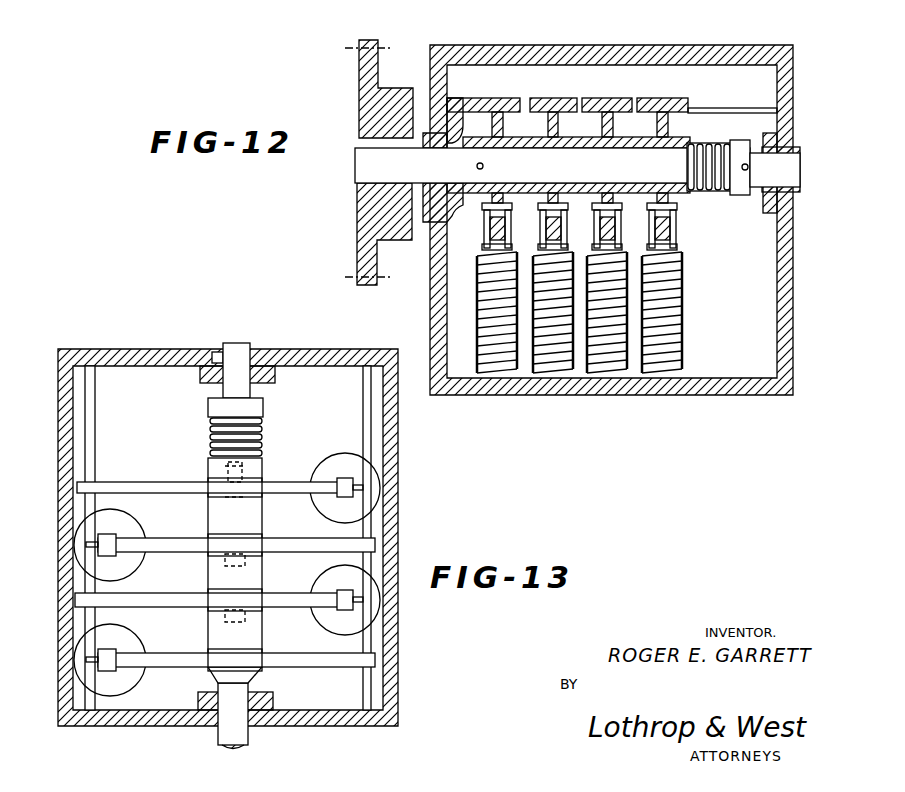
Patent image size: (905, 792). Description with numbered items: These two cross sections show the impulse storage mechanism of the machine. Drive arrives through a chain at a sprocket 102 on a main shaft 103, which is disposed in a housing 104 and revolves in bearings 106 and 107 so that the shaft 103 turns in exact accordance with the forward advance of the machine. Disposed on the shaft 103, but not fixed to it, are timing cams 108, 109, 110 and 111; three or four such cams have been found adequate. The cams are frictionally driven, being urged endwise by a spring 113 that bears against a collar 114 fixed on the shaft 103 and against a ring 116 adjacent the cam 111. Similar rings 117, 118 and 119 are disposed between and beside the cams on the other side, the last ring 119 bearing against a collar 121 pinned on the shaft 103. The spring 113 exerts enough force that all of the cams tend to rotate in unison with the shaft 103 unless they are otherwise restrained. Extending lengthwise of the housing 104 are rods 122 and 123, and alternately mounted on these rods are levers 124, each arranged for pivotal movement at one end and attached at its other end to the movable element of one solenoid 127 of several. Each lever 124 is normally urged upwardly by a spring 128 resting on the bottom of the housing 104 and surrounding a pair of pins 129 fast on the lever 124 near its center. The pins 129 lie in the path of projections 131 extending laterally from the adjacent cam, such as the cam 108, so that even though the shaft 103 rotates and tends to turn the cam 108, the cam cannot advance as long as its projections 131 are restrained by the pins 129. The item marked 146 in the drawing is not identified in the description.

In FIG. 12, the sprocket 102 is at (359, 82).
In FIG. 12, the main shaft 103 is at (357, 168).
In FIG. 13, the main shaft 103 is at (252, 345).
In FIG. 12, the housing 104 is at (745, 395).
In FIG. 13, the housing 104 is at (105, 358).
In FIG. 12, the bearing 106 is at (441, 216).
In FIG. 13, the bearing 106 is at (205, 726).
In FIG. 12, the bearing 107 is at (790, 157).
In FIG. 13, the bearing 107 is at (235, 328).
In FIG. 12, the timing cam 108 is at (498, 118).
In FIG. 13, the timing cam 108 is at (210, 652).
In FIG. 12, the timing cam 109 is at (570, 97).
In FIG. 13, the timing cam 109 is at (206, 592).
In FIG. 12, the timing cam 110 is at (620, 97).
In FIG. 13, the timing cam 110 is at (216, 538).
In FIG. 12, the timing cam 111 is at (650, 113).
In FIG. 13, the timing cam 111 is at (265, 482).
In FIG. 12, the spring 113 is at (702, 196).
In FIG. 13, the spring 113 is at (210, 425).
In FIG. 12, the collar 114 is at (736, 143).
In FIG. 13, the collar 114 is at (263, 406).
In FIG. 12, the ring 116 is at (690, 143).
In FIG. 13, the ring 116 is at (262, 452).
In FIG. 12, the ring 117 is at (660, 137).
In FIG. 12, the ring 118 is at (605, 137).
In FIG. 13, the ring 118 is at (242, 565).
In FIG. 12, the ring 119 is at (553, 115).
In FIG. 13, the ring 119 is at (241, 622).
In FIG. 12, the collar 121 is at (476, 122).
In FIG. 13, the rod 122 is at (96, 433).
In FIG. 13, the rod 123 is at (364, 392).
In FIG. 12, the lever 124 is at (485, 227).
In FIG. 13, the lever 124 is at (147, 481).
In FIG. 13, the solenoid 127 is at (342, 455).
In FIG. 12, the spring 128 is at (500, 380).
In FIG. 12, the pin 129 is at (738, 266).
In FIG. 13, the pin 129 is at (262, 532).
In FIG. 12, the projection 131 is at (561, 226).
In FIG. 13, the projection 131 is at (212, 463).
In FIG. 12, the wall boss 146 is at (433, 100).